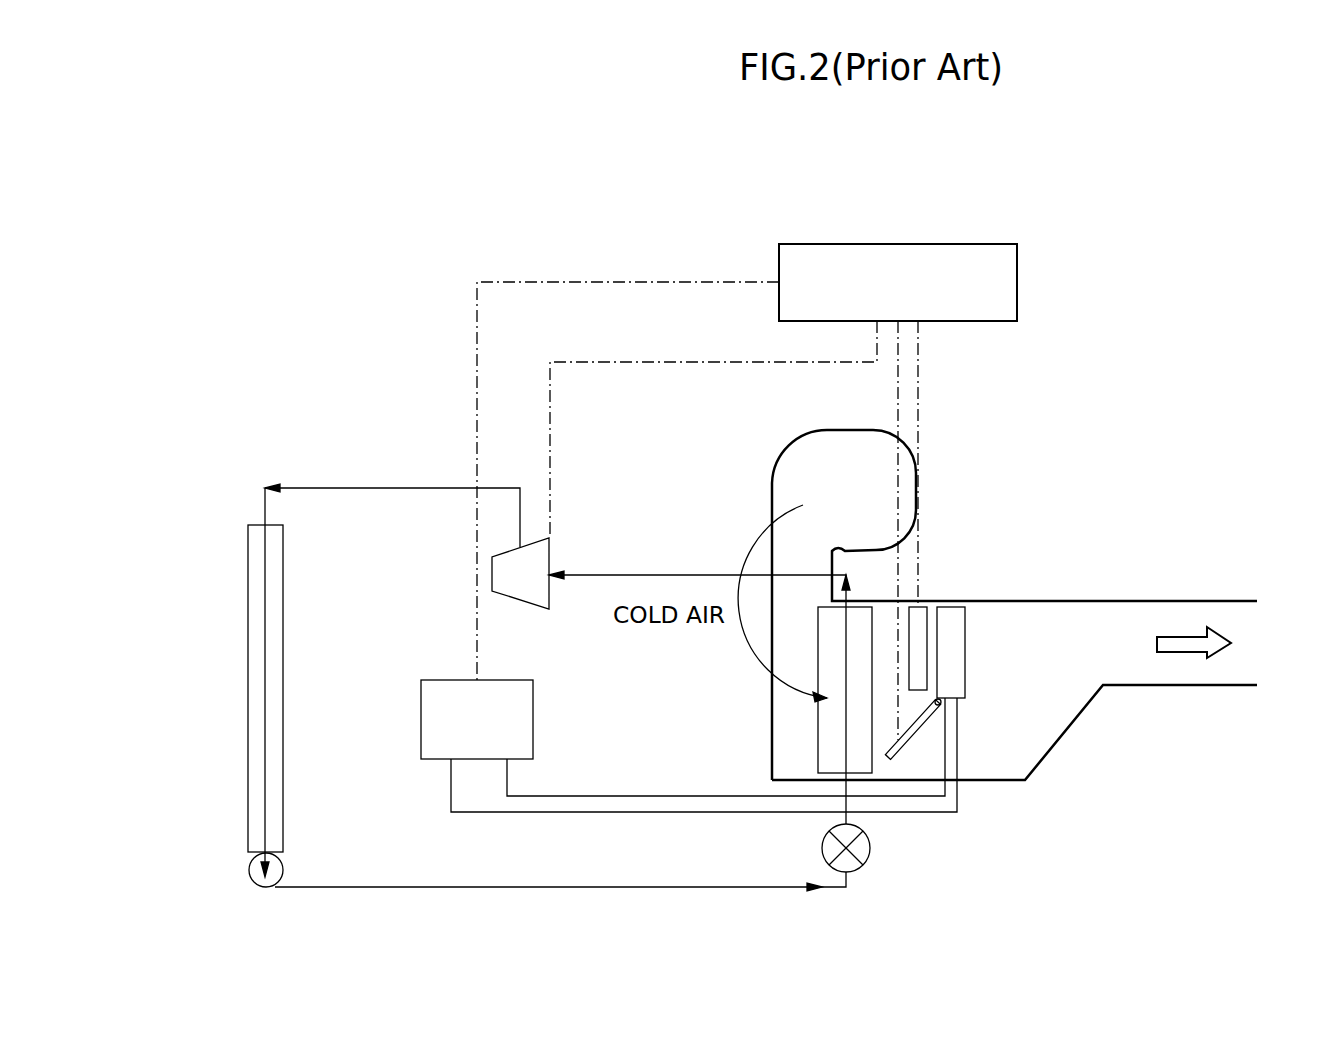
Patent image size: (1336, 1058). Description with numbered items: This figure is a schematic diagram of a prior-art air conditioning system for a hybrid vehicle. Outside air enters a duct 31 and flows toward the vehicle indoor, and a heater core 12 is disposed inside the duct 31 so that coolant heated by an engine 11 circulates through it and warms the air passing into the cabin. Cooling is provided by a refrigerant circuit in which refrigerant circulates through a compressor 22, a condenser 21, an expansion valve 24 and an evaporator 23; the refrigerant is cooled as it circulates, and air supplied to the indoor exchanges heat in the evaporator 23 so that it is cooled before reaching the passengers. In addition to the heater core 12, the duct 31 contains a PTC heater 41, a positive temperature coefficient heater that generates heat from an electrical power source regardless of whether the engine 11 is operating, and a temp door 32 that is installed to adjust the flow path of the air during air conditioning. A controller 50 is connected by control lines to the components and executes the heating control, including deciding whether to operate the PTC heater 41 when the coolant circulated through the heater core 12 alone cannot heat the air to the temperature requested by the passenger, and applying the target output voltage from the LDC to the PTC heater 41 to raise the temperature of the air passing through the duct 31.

The engine 11 is at (533, 719).
The heater core 12 is at (952, 632).
The condenser 21 is at (826, 739).
The compressor 22 is at (549, 560).
The evaporator 23 is at (248, 688).
The expansion valve 24 is at (862, 850).
The duct 31 is at (1188, 601).
The temp door 32 is at (890, 760).
The PTC heater 41 is at (917, 668).
The controller 50 is at (1017, 282).